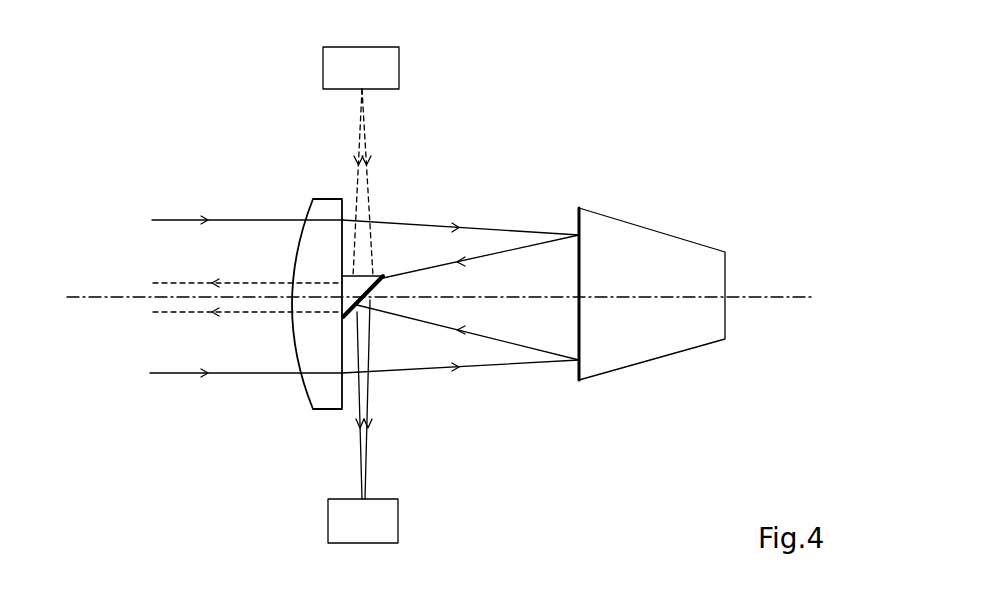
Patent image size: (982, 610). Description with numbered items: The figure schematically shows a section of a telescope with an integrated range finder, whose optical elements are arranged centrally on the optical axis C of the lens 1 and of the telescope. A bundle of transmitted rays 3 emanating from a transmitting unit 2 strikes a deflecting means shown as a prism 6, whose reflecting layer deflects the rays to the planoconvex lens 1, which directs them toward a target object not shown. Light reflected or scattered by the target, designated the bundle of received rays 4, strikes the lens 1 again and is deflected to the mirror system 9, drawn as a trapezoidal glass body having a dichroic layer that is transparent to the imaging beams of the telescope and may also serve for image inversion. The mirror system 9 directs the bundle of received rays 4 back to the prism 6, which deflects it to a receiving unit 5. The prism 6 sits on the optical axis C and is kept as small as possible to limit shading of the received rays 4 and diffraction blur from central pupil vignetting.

The lens 1 is at (321, 210).
The transmitting unit 2 is at (348, 82).
The bundle of transmitted rays 3 is at (185, 282).
The bundle of received rays 4 is at (184, 374).
The receiving unit 5 is at (352, 537).
The prism 6 is at (368, 272).
The mirror system 9 is at (598, 217).
The optical axis C is at (778, 298).